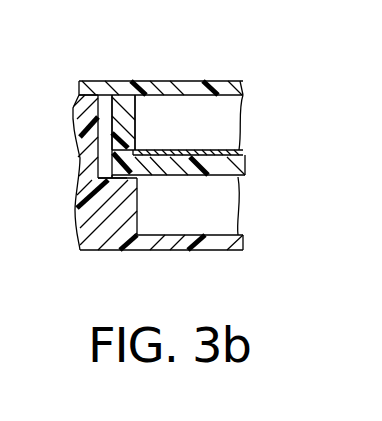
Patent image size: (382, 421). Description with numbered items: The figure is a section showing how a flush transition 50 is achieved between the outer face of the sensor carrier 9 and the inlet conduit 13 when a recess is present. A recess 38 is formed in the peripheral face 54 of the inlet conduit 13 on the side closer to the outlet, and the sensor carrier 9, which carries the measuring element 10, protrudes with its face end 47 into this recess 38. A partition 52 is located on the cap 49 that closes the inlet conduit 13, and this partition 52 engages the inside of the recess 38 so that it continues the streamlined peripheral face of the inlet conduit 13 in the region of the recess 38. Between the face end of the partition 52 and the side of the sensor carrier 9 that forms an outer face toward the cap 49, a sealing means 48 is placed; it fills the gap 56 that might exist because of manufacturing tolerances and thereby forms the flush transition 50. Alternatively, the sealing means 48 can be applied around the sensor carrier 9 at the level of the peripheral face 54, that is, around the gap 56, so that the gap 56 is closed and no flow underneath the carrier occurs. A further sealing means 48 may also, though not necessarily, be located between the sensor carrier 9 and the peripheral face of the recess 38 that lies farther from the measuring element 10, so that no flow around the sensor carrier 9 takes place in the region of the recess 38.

The sensor carrier 9 is at (218, 176).
The measuring element 10 is at (246, 153).
The inlet conduit 13 is at (205, 108).
The recess 38 is at (100, 153).
The face end 47 is at (135, 168).
The sealing means 48 is at (111, 112).
The cap 49 is at (243, 86).
The flush transition 50 is at (137, 141).
The partition 52 is at (121, 118).
The peripheral face 54 is at (137, 220).
The gap 56 is at (117, 138).